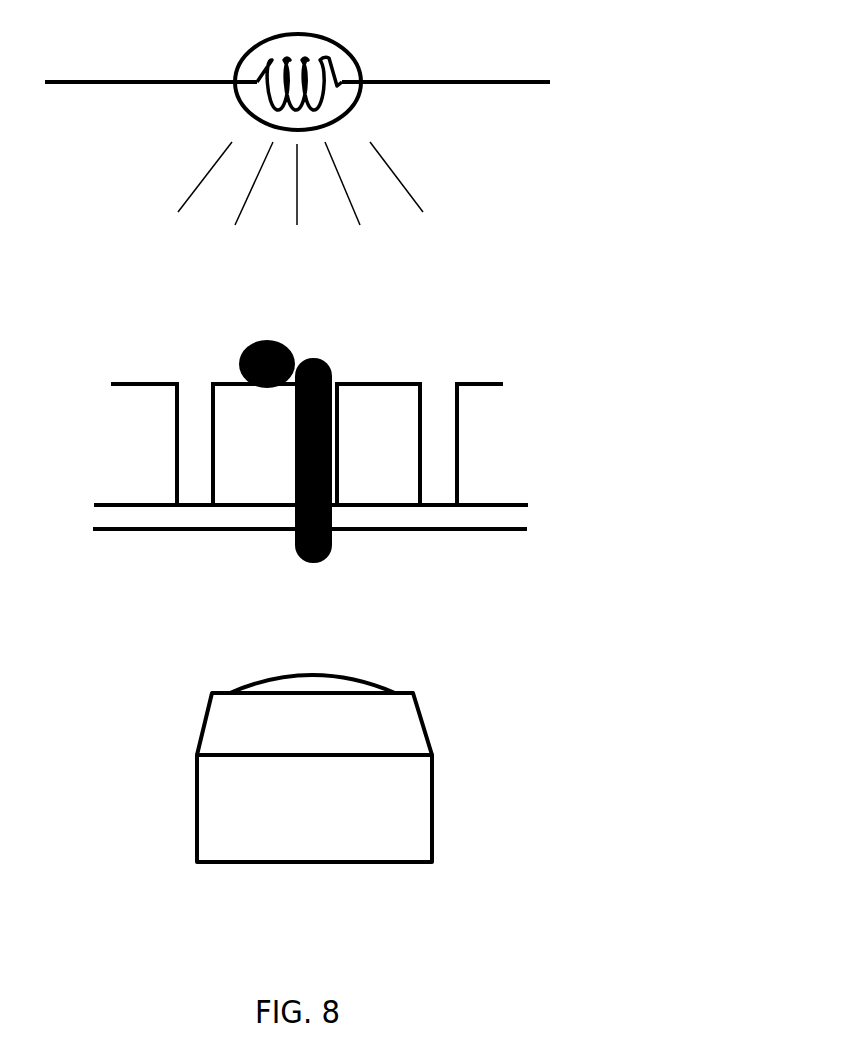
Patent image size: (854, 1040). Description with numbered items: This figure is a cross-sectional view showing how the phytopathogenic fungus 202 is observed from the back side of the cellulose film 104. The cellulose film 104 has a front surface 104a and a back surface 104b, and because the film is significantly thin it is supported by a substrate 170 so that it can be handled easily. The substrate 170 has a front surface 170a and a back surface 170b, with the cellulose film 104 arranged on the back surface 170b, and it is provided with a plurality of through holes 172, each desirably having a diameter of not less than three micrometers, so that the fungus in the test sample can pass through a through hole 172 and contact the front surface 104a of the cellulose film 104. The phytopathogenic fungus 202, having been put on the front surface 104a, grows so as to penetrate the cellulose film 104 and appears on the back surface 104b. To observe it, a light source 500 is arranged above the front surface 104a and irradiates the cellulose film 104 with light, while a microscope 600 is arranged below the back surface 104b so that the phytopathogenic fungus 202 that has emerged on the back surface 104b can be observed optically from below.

The light source 500 is at (355, 57).
The phytopathogenic fungus 202 is at (247, 348).
The substrate 170 is at (483, 380).
The front surface of the substrate 170a is at (365, 382).
The back surface of the substrate 170b is at (378, 508).
The through hole 172 is at (203, 482).
The cellulose film 104 is at (499, 517).
The front surface of the cellulose film 104a is at (436, 503).
The back surface of the cellulose film 104b is at (283, 533).
The microscope 600 is at (212, 810).